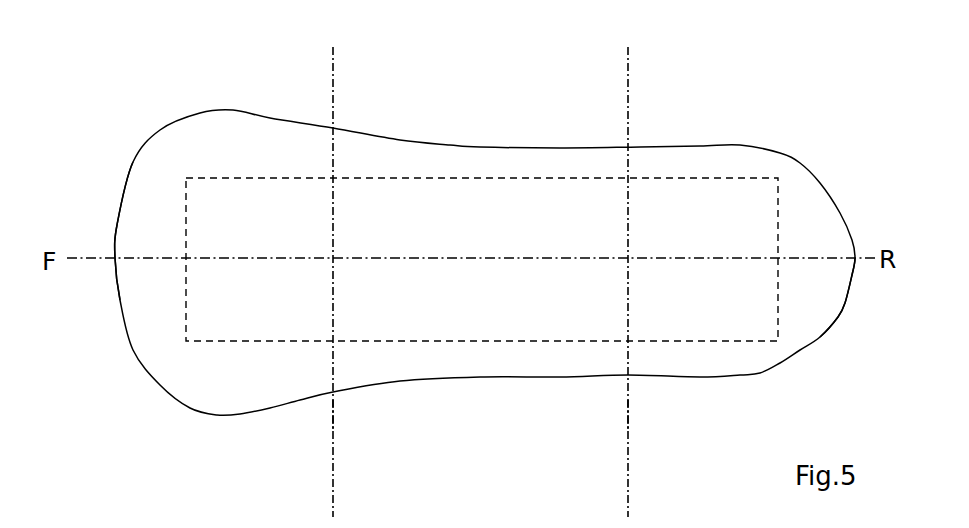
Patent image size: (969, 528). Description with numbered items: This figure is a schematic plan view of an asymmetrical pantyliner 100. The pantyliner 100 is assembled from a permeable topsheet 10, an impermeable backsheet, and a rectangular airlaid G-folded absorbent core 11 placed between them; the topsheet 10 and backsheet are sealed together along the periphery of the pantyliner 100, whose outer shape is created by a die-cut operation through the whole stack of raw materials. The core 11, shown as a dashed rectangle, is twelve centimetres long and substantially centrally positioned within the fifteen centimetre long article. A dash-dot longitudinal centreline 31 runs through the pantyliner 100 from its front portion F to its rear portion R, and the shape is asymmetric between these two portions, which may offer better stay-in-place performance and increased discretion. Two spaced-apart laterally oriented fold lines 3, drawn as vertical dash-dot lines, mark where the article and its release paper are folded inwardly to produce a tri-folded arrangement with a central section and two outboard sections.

The pantyliner 100 is at (685, 120).
The topsheet 10 is at (817, 272).
The absorbent core 11 is at (537, 338).
The longitudinal centreline 31 is at (100, 258).
The fold lines 3 is at (333, 425).